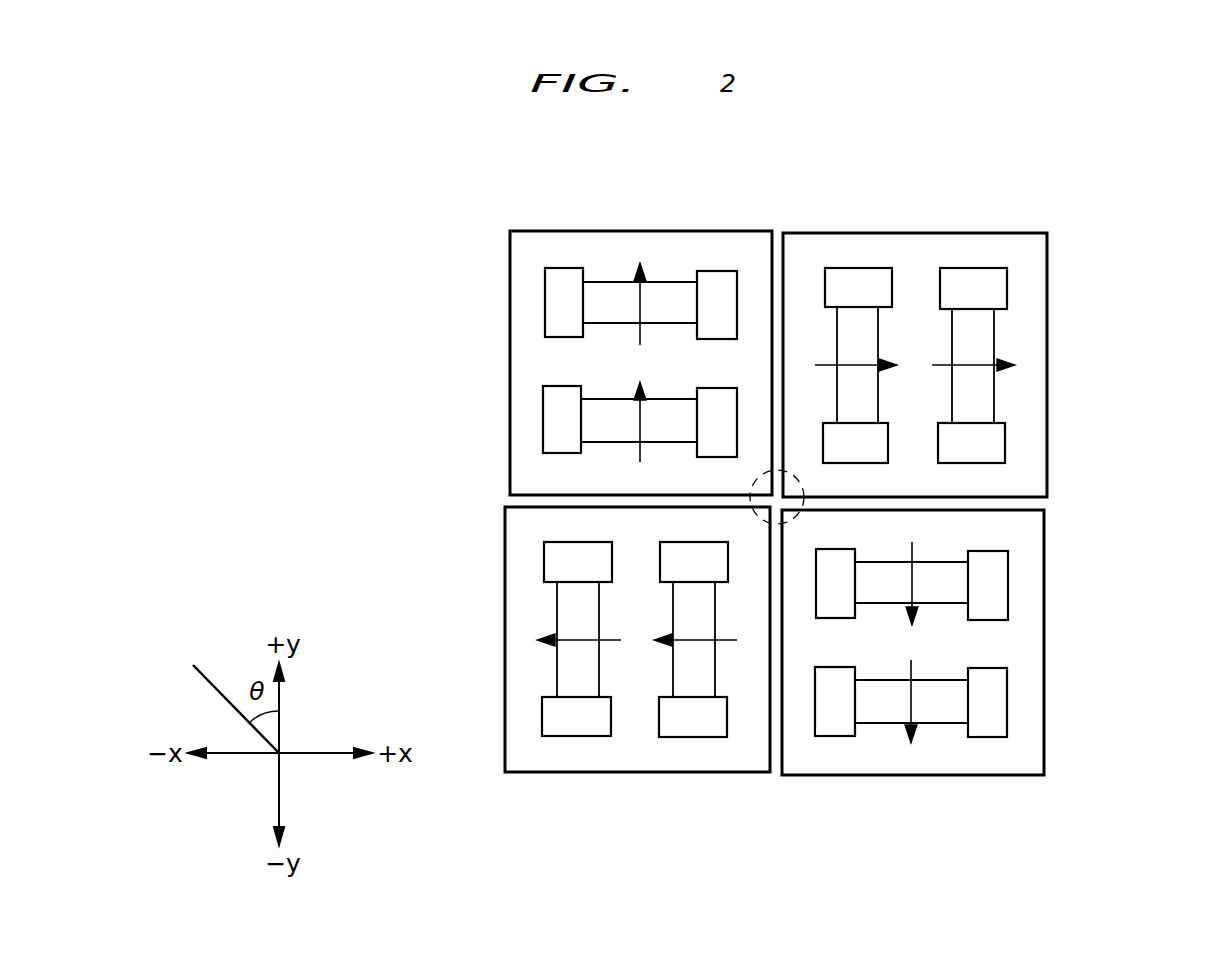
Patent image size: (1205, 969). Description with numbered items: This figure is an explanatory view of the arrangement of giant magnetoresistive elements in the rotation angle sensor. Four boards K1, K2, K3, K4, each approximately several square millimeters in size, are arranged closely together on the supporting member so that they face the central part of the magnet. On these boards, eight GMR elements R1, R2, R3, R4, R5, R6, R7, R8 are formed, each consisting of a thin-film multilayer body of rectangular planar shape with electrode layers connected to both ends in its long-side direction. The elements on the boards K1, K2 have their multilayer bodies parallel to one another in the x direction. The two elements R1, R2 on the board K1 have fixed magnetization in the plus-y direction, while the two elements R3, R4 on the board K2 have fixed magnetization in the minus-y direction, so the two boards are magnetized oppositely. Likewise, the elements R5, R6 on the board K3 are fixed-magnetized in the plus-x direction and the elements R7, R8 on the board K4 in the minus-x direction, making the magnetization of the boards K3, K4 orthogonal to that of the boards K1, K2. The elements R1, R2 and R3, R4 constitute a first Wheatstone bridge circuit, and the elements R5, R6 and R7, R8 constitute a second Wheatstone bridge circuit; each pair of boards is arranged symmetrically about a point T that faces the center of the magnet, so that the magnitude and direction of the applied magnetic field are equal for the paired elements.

The board K1 is at (577, 230).
The board K2 is at (965, 778).
The board K3 is at (1048, 291).
The board K4 is at (505, 585).
The giant magnetoresistive element R1 is at (562, 313).
The giant magnetoresistive element R2 is at (562, 432).
The giant magnetoresistive element R3 is at (992, 713).
The giant magnetoresistive element R4 is at (993, 595).
The giant magnetoresistive element R5 is at (981, 300).
The giant magnetoresistive element R6 is at (865, 300).
The giant magnetoresistive element R7 is at (583, 711).
The giant magnetoresistive element R8 is at (700, 711).
The point T is at (800, 491).